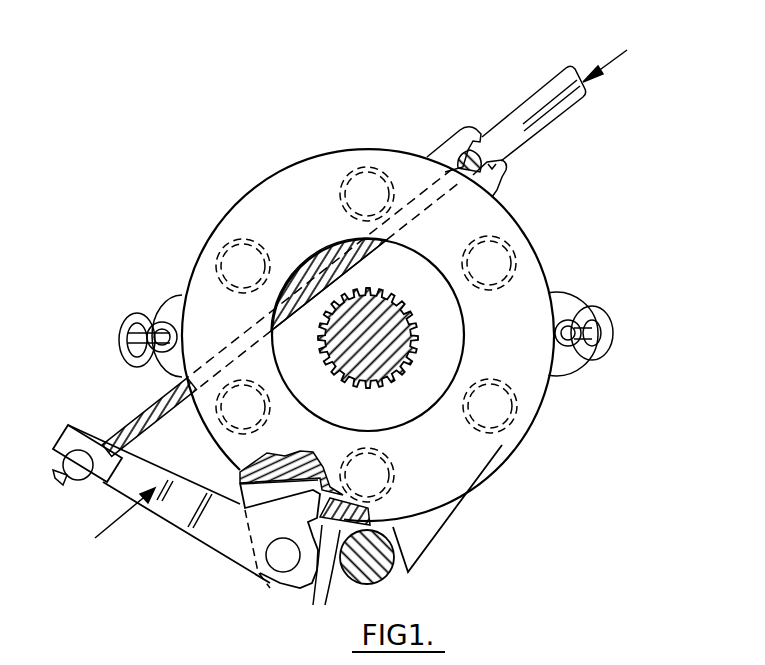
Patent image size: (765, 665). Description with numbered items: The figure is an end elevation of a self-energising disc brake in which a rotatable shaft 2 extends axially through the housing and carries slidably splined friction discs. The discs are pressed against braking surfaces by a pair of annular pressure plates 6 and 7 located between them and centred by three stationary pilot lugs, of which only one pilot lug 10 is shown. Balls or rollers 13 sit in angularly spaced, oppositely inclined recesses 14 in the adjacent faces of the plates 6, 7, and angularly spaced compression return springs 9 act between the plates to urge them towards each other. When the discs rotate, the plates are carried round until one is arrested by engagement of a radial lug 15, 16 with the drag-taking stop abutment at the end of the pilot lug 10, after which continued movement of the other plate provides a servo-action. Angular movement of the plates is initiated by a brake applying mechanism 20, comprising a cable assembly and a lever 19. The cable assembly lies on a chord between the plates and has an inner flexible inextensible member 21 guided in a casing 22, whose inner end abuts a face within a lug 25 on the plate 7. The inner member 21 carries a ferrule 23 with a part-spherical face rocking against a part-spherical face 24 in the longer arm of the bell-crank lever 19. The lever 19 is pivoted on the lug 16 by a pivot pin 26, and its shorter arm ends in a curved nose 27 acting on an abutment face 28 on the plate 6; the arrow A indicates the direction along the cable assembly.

The rotatable shaft 2 is at (385, 330).
The annular pressure plate 6 is at (480, 450).
The annular pressure plate 7 is at (240, 480).
The compression return springs 9 is at (130, 325).
The pilot lug 10 is at (373, 567).
The balls or rollers 13 is at (357, 180).
The recesses 14 is at (240, 243).
The radial lug 15 is at (423, 530).
The radial lug 16 is at (305, 590).
The lever 19 is at (167, 508).
The brake applying mechanism 20 is at (116, 528).
The inner flexible inextensible member 21 is at (118, 435).
The casing 22 is at (508, 125).
The ferrule 23 is at (80, 470).
The part-spherical face 24 is at (75, 440).
The lug 25 is at (452, 147).
The pivot pin 26 is at (280, 556).
The curved nose 27 is at (373, 503).
The abutment face 28 is at (328, 562).
The rod direction arrow A is at (610, 54).